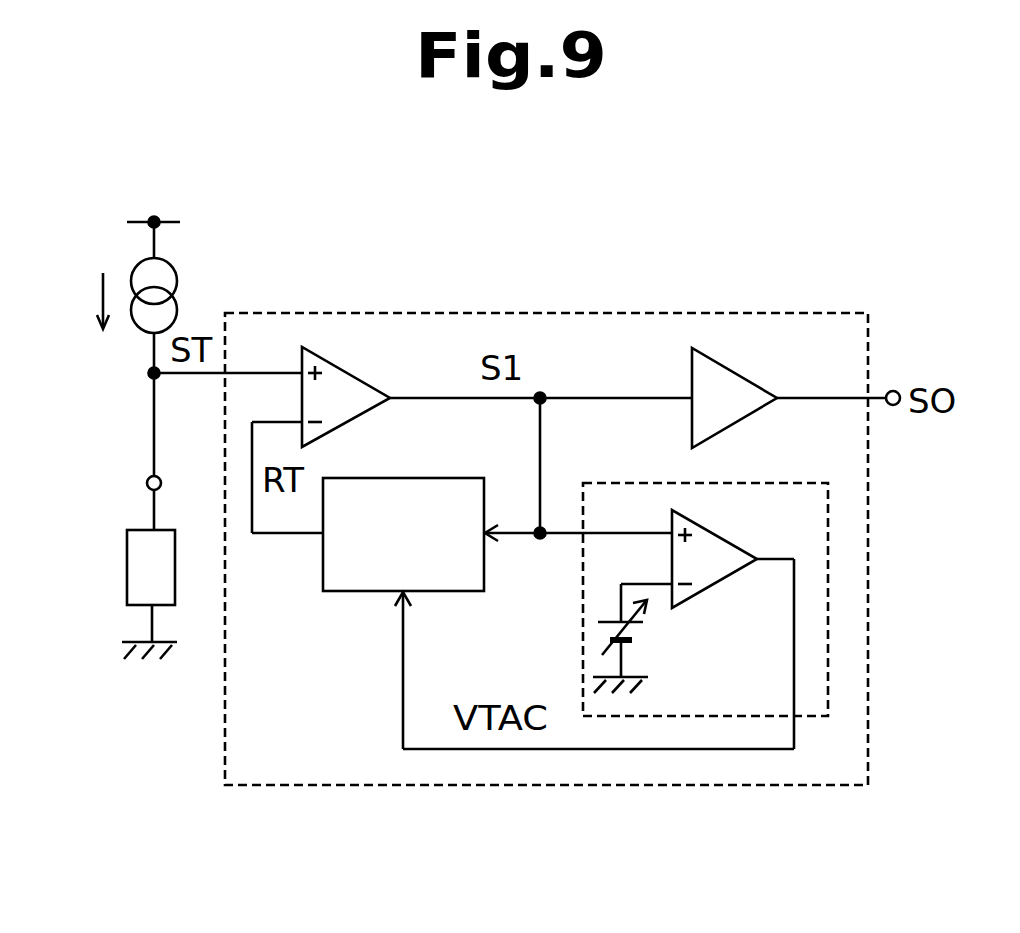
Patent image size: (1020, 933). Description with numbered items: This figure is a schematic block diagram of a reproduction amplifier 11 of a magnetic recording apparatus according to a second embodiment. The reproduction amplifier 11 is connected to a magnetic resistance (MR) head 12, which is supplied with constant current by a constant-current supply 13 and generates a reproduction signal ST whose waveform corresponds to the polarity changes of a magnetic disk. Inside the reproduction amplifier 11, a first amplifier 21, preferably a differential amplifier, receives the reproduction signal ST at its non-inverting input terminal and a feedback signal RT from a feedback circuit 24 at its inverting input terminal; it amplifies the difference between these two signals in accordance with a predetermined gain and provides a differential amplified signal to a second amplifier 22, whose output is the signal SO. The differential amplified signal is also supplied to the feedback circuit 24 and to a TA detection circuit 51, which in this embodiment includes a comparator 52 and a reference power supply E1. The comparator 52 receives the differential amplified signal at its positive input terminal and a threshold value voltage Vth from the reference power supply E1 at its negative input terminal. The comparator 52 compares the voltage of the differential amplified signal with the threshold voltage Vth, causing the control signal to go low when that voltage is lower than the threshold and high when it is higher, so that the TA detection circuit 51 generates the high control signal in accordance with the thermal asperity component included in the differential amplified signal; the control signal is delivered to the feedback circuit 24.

The reproduction amplifier 11 is at (765, 313).
The magnetic resistance (MR) head 12 is at (127, 545).
The constant-current supply 13 is at (177, 264).
The first amplifier 21 is at (335, 366).
The second amplifier 22 is at (717, 360).
The feedback circuit 24 is at (437, 478).
The TA detection circuit 51 is at (753, 478).
The comparator 52 is at (703, 527).
The reference power supply E1 is at (628, 643).